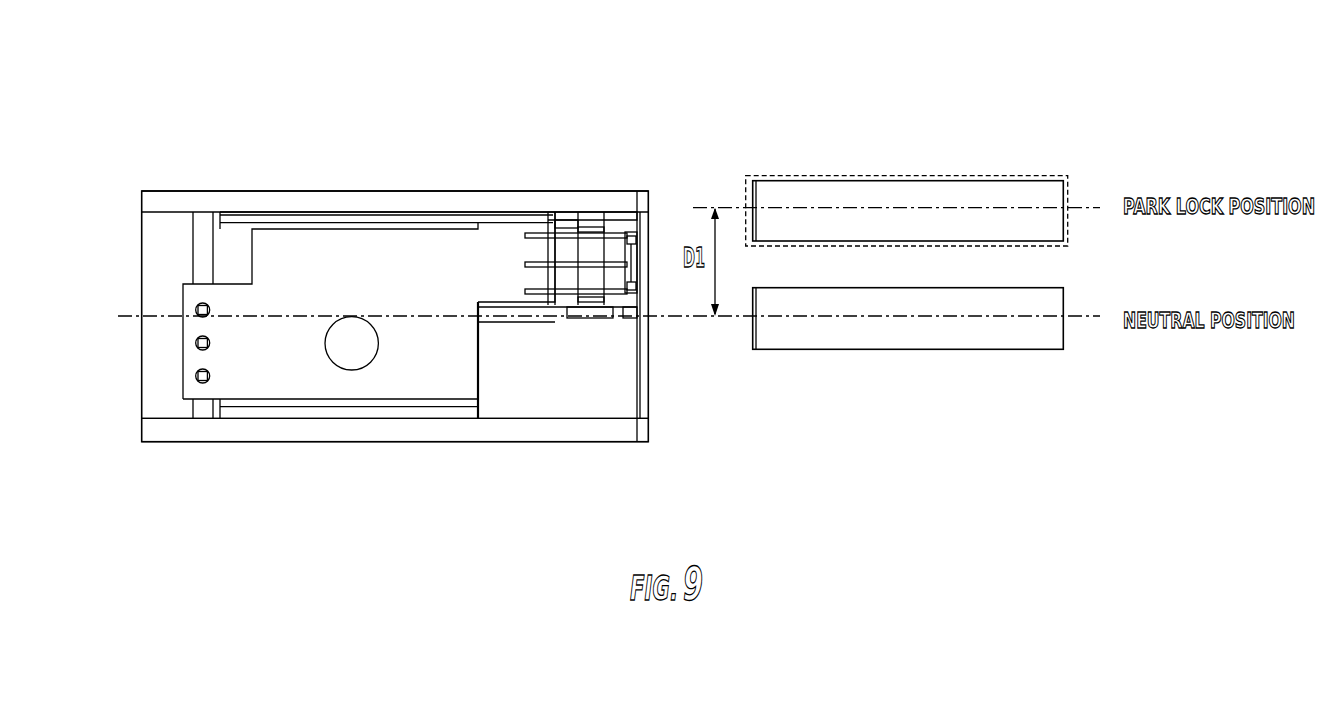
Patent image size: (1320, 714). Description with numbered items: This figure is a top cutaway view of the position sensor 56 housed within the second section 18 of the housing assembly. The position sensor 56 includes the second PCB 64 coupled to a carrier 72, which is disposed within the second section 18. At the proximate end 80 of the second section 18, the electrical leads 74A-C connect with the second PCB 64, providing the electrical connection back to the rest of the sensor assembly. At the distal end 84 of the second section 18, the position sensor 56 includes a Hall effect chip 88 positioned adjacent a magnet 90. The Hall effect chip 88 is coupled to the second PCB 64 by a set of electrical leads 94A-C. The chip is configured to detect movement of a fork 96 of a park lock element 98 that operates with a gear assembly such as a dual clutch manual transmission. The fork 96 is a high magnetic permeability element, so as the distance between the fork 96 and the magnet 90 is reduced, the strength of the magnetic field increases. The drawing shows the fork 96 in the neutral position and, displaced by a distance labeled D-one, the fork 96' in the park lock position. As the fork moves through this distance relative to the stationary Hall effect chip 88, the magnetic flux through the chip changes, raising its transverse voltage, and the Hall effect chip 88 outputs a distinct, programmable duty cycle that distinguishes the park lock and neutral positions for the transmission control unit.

The second section 18 is at (367, 450).
The position sensor 56 is at (384, 110).
The second PCB 64 is at (385, 230).
The carrier 72 is at (237, 230).
The electrical leads 74A-C is at (181, 343).
The proximate end 80 is at (138, 182).
The distal end 84 is at (645, 180).
The Hall effect chip 88 is at (627, 263).
The magnet 90 is at (590, 243).
The electrical leads 94A-C is at (522, 247).
The fork 96 is at (908, 348).
The fork in park lock position 96' is at (908, 177).
The park lock element 98 is at (989, 131).